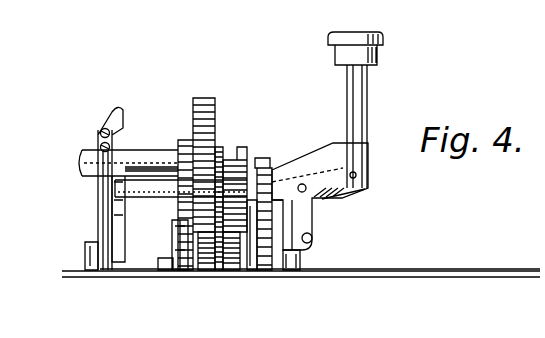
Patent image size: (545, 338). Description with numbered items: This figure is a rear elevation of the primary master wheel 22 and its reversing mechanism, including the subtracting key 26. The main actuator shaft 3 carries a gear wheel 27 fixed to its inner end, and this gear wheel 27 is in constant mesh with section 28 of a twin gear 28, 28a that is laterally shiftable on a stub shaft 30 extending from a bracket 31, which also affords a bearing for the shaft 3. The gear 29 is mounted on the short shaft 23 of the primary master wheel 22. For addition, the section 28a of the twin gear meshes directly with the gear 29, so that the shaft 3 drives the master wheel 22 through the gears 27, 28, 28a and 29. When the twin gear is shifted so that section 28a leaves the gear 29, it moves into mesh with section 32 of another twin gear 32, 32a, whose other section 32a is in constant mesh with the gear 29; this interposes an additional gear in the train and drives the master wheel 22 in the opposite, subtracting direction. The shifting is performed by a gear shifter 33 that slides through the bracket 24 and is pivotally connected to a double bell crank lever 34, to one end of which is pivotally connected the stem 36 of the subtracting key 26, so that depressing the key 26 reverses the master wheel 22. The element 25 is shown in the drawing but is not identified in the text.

The main actuator shaft 3 is at (140, 150).
The primary master wheel 22 is at (116, 135).
The short shaft 23 is at (167, 188).
The bracket 24 is at (266, 158).
The support 25 is at (97, 190).
The subtracting key 26 is at (383, 39).
The gear wheel 27 is at (207, 98).
The twin gear section 28 is at (210, 274).
The twin gear section 28a is at (229, 274).
The gear 29 is at (250, 226).
The stub shaft 30 is at (191, 273).
The bracket 31 is at (190, 238).
The twin gear section 32 is at (219, 146).
The twin gear section 32a is at (243, 146).
The gear shifter 33 is at (312, 260).
The double bell crank lever 34 is at (313, 212).
The stem 36 is at (366, 104).